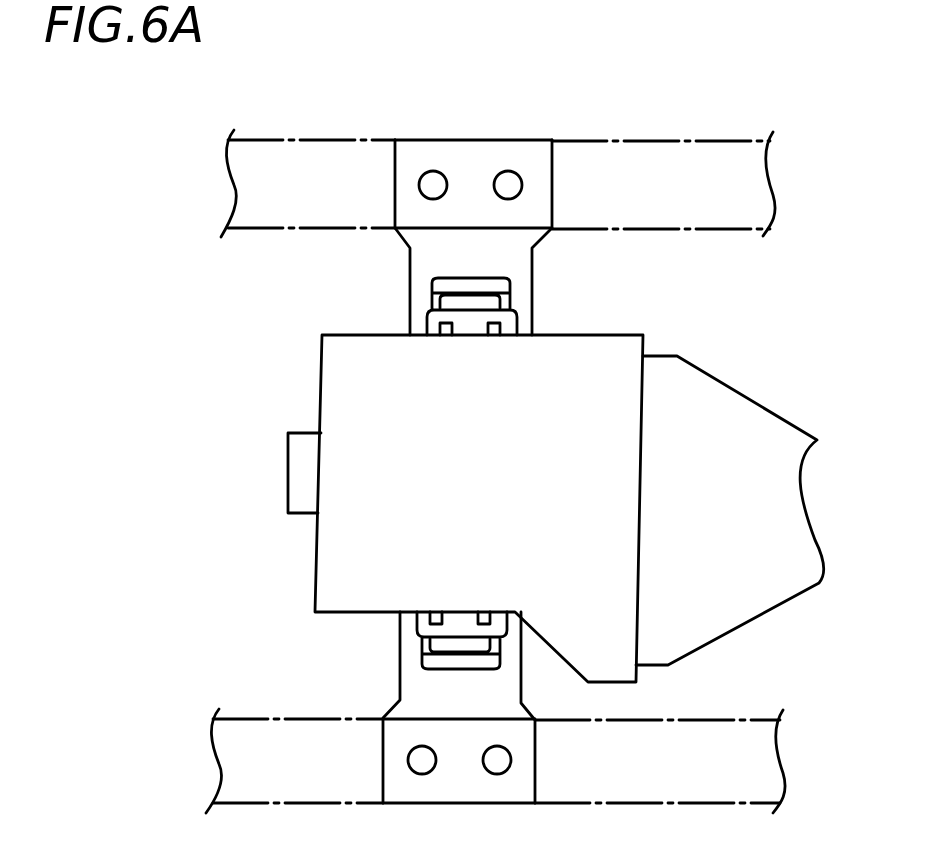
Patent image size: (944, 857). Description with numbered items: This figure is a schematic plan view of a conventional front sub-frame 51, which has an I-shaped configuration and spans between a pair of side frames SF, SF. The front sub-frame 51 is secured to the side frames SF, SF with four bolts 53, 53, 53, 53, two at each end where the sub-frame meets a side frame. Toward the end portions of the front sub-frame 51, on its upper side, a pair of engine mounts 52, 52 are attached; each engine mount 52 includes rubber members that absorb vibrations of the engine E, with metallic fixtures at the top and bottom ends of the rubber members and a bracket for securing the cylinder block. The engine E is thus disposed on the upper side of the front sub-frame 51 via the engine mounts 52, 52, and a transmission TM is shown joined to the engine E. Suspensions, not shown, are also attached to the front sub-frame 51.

The front sub-frame 51 is at (422, 291).
The engine mount 52 is at (488, 300).
The bolt 53 is at (434, 188).
The engine E is at (333, 578).
The transmission TM is at (750, 603).
The side frame SF is at (640, 182).